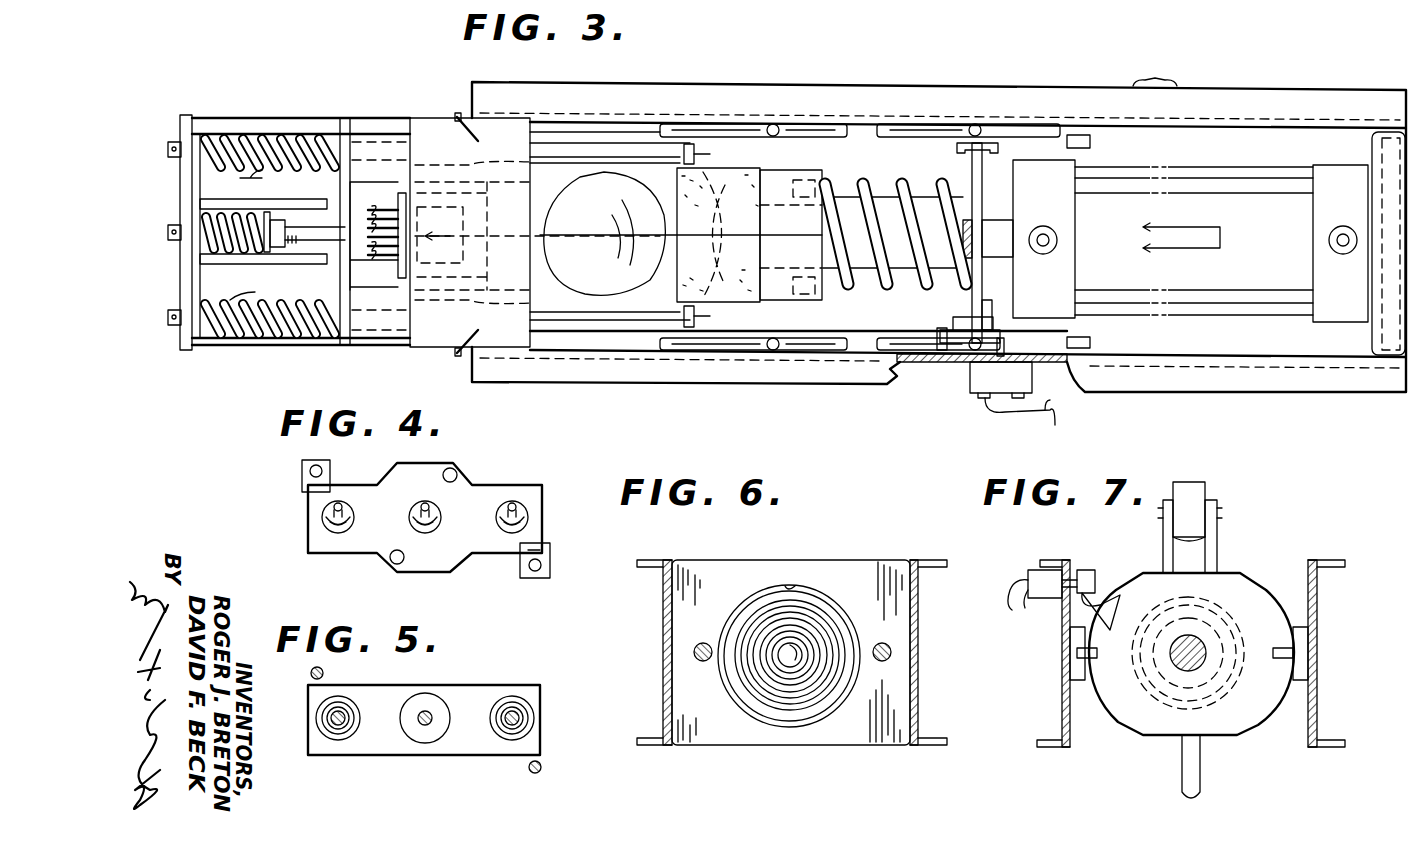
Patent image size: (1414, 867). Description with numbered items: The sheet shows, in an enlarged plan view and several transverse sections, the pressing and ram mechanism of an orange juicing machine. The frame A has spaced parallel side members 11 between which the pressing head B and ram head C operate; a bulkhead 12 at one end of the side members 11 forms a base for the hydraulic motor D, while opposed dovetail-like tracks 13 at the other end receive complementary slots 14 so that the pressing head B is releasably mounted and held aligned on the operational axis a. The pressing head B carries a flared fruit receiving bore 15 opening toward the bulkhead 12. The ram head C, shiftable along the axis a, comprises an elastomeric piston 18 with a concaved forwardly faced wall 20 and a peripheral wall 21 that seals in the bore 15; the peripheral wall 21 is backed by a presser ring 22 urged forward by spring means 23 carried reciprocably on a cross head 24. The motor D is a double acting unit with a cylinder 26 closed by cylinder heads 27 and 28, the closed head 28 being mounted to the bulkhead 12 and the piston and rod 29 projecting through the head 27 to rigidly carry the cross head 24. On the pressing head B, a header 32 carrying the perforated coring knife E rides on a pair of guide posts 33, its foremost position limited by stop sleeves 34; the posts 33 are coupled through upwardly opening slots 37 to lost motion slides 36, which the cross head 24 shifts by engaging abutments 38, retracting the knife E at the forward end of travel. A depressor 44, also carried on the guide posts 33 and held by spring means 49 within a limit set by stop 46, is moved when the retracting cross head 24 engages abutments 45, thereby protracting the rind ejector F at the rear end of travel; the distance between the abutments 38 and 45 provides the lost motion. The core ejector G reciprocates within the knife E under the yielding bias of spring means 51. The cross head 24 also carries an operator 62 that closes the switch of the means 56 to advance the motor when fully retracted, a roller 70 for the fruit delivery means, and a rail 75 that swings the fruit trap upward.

In FIG. 3, the side members 11 is at (993, 116).
In FIG. 6, the side members 11 is at (663, 635).
In FIG. 3, the bulkhead 12 is at (1372, 145).
In FIG. 3, the tracks 13 is at (460, 115).
In FIG. 3, the slots 14 is at (462, 350).
In FIG. 3, the fruit receiving bore 15 is at (548, 187).
In FIG. 6, the fruit receiving bore 15 is at (795, 584).
In FIG. 3, the piston 18 is at (703, 188).
In FIG. 3, the concaved forwardly faced wall 20 is at (690, 285).
In FIG. 3, the peripheral wall 21 is at (765, 300).
In FIG. 3, the presser ring 22 is at (822, 300).
In FIG. 3, the spring means 23 is at (908, 185).
In FIG. 3, the cross head 24 is at (972, 172).
In FIG. 7, the cross head 24 is at (1127, 710).
In FIG. 3, the cylinder 26 is at (1282, 244).
In FIG. 3, the cylinder head 27 is at (1075, 205).
In FIG. 3, the cylinder head 28 is at (1313, 270).
In FIG. 3, the piston and rod 29 is at (996, 218).
In FIG. 3, the header 32 is at (340, 280).
In FIG. 5, the header 32 is at (480, 690).
In FIG. 3, the guide posts 33 is at (268, 134).
In FIG. 4, the guide posts 33 is at (330, 522).
In FIG. 5, the guide posts 33 is at (340, 735).
In FIG. 6, the guide posts 33 is at (700, 662).
In FIG. 3, the stop sleeves 34 is at (368, 142).
In FIG. 3, the lost motion slides 36 is at (705, 124).
In FIG. 7, the lost motion slides 36 is at (1075, 668).
In FIG. 3, the slots 37 is at (698, 153).
In FIG. 3, the abutments 38 is at (775, 340).
In FIG. 3, the depressor 44 is at (180, 275).
In FIG. 4, the depressor 44 is at (452, 563).
In FIG. 3, the abutments 45 is at (1090, 143).
In FIG. 3, the stop 46 is at (180, 125).
In FIG. 4, the stop 46 is at (302, 478).
In FIG. 3, the spring means 49 is at (250, 172).
In FIG. 5, the spring means 49 is at (345, 700).
In FIG. 3, the spring means 51 is at (214, 220).
In FIG. 3, the means to advance the motor 56 is at (992, 385).
In FIG. 7, the means to advance the motor 56 is at (1043, 593).
In FIG. 3, the operator 62 is at (940, 365).
In FIG. 7, the operator 62 is at (1095, 575).
In FIG. 7, the roller 70 is at (1190, 488).
In FIG. 7, the rail 75 is at (1198, 790).
In FIG. 3, the frame A is at (897, 87).
In FIG. 6, the frame A is at (645, 750).
In FIG. 7, the frame A is at (1328, 556).
In FIG. 3, the pressing head B is at (415, 116).
In FIG. 6, the pressing head B is at (868, 558).
In FIG. 3, the ram head C is at (795, 168).
In FIG. 3, the hydraulic motor D is at (1243, 215).
In FIG. 3, the perforated coring knife E is at (375, 205).
In FIG. 6, the perforated coring knife E is at (805, 660).
In FIG. 3, the rind ejector F is at (392, 280).
In FIG. 3, the core ejector G is at (537, 243).
In FIG. 5, the core ejector G is at (440, 722).
In FIG. 6, the core ejector G is at (783, 668).
In FIG. 3, the operational axis a is at (568, 238).